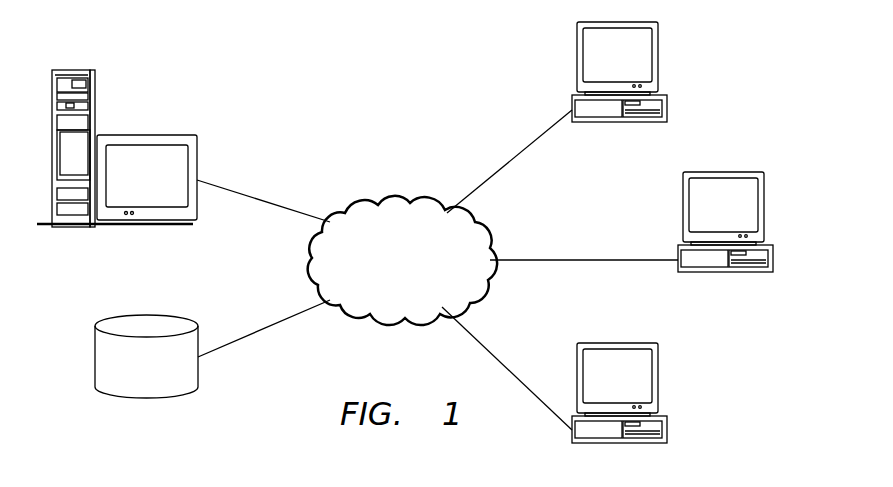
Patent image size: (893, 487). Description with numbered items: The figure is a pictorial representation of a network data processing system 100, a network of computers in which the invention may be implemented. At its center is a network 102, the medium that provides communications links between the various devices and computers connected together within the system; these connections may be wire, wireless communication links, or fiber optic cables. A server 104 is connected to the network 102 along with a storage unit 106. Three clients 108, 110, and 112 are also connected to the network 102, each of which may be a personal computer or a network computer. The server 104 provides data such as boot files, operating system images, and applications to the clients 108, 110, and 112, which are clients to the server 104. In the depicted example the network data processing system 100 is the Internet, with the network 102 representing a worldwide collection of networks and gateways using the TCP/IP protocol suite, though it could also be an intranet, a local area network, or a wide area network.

The network data processing system 100 is at (278, 81).
The network 102 is at (383, 283).
The server 104 is at (93, 93).
The storage unit 106 is at (95, 358).
The client 108 is at (658, 65).
The client 110 is at (765, 208).
The client 112 is at (658, 382).